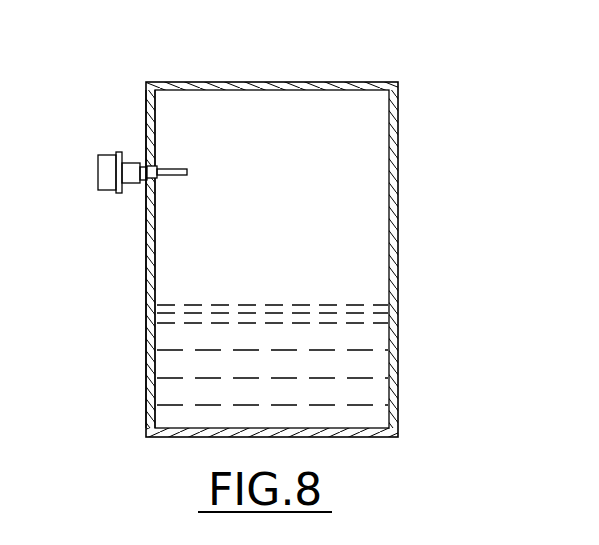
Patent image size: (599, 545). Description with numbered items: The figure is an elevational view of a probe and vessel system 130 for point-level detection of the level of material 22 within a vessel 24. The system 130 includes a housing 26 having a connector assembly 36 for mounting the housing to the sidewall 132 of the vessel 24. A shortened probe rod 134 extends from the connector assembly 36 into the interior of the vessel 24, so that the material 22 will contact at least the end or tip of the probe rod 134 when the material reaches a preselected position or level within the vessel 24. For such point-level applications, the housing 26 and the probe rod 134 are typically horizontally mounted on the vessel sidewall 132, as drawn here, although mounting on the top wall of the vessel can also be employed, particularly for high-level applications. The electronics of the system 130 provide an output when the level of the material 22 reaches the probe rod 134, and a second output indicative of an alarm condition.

The material 22 is at (377, 337).
The vessel 24 is at (298, 258).
The housing 26 is at (103, 196).
The connector assembly 36 is at (152, 167).
The system 130 is at (175, 147).
The sidewall 132 is at (155, 235).
The probe rod 134 is at (187, 170).